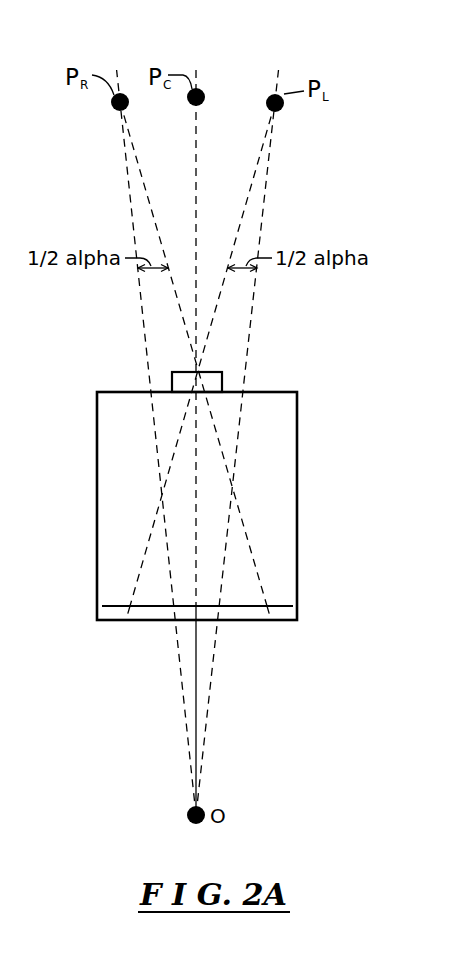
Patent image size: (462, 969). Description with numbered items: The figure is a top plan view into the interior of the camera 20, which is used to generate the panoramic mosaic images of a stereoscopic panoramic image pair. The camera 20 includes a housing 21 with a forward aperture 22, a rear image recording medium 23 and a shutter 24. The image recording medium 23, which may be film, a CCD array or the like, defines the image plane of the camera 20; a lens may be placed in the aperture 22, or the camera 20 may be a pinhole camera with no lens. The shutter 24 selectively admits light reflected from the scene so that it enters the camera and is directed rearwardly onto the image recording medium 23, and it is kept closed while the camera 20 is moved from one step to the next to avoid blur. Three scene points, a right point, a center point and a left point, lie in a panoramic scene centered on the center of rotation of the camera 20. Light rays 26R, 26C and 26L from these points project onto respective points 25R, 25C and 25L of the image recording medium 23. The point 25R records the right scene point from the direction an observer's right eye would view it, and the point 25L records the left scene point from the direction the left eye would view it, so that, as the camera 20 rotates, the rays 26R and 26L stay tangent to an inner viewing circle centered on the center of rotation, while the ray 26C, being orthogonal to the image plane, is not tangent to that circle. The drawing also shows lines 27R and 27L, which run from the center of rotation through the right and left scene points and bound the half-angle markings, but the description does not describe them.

The camera 20 is at (381, 442).
The housing 21 is at (297, 456).
The forward aperture 22 is at (208, 372).
The image recording medium 23 is at (225, 608).
The shutter 24 is at (223, 391).
The point of the image recording medium 25L is at (130, 621).
The point of the image recording medium 25C is at (196, 621).
The point of the image recording medium 25R is at (268, 621).
The light ray 26R is at (134, 153).
The light ray 26C is at (198, 151).
The light ray 26L is at (252, 182).
The line from origin O to right object point 27R is at (143, 325).
The line from origin O to left object point 27L is at (252, 316).